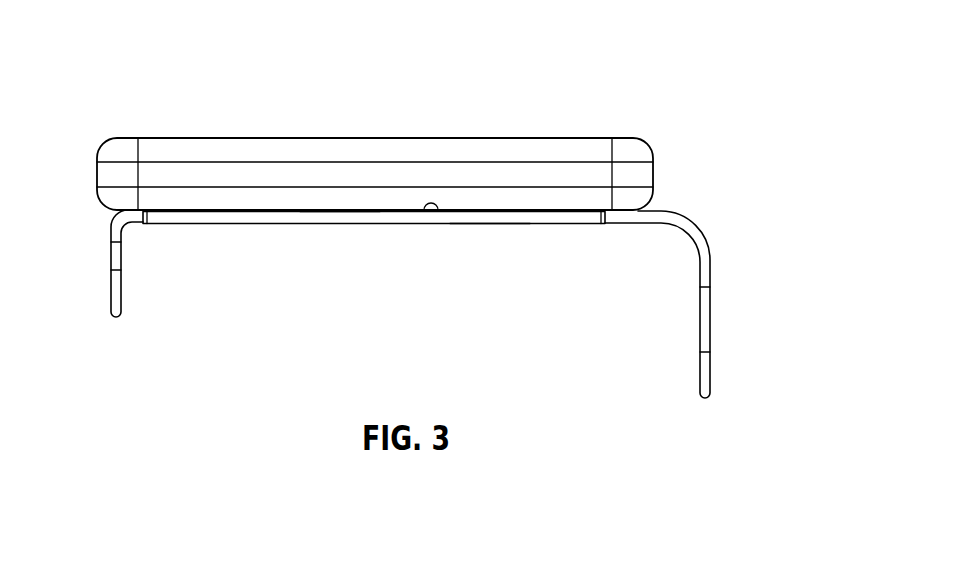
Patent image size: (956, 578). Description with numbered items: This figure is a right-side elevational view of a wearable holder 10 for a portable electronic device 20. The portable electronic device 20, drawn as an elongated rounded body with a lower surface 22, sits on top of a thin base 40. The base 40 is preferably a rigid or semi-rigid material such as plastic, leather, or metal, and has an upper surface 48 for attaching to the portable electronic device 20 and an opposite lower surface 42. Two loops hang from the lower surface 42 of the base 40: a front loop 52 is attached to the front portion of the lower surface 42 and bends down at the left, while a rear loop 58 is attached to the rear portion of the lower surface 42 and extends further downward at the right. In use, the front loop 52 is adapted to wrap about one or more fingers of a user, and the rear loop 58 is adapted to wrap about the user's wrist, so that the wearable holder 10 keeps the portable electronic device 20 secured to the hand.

The wearable holder 10 is at (571, 303).
The portable electronic device 20 is at (353, 168).
The lower surface 22 is at (275, 215).
The base 40 is at (338, 217).
The lower surface 42 is at (488, 223).
The upper surface 48 is at (423, 210).
The front loop 52 is at (117, 293).
The rear loop 58 is at (704, 323).